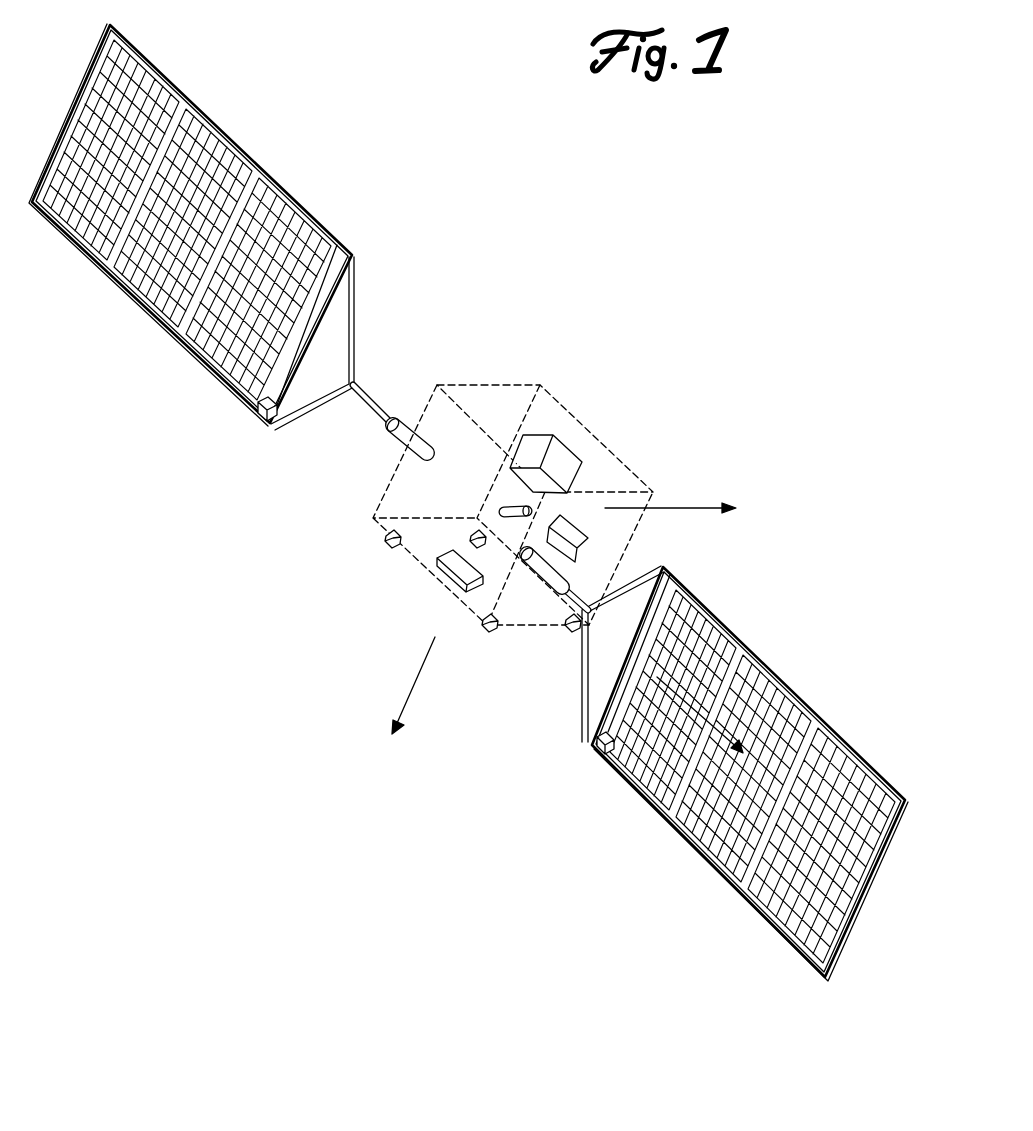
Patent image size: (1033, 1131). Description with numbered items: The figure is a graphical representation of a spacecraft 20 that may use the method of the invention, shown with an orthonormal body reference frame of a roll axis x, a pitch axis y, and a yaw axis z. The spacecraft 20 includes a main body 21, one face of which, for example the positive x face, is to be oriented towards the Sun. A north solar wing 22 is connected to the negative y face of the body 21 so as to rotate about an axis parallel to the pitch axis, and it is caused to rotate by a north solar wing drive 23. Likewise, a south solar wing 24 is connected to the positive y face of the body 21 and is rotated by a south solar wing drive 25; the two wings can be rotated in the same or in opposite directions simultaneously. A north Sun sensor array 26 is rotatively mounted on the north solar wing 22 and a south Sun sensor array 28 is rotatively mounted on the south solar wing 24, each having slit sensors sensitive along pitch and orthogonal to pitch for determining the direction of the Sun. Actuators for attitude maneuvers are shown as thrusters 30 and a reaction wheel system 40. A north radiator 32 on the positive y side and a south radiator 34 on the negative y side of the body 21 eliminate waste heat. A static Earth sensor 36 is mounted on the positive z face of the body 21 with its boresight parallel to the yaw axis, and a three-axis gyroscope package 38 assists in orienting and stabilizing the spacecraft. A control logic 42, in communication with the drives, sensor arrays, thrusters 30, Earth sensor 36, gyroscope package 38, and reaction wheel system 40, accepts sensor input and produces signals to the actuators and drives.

The spacecraft 20 is at (297, 613).
The main body 21 is at (600, 455).
The north solar wing 22 is at (215, 122).
The north solar wing drive 23 is at (412, 433).
The south solar wing 24 is at (745, 905).
The south solar wing drive 25 is at (535, 575).
The north Sun sensor array 26 is at (268, 425).
The south Sun sensor array 28 is at (602, 760).
The thrusters 30 is at (385, 535).
The north radiator 32 is at (495, 398).
The south radiator 34 is at (640, 525).
The static Earth sensor 36 is at (498, 508).
The three-axis gyroscope package 38 is at (582, 532).
The reaction wheel system 40 is at (547, 433).
The control logic 42 is at (440, 577).